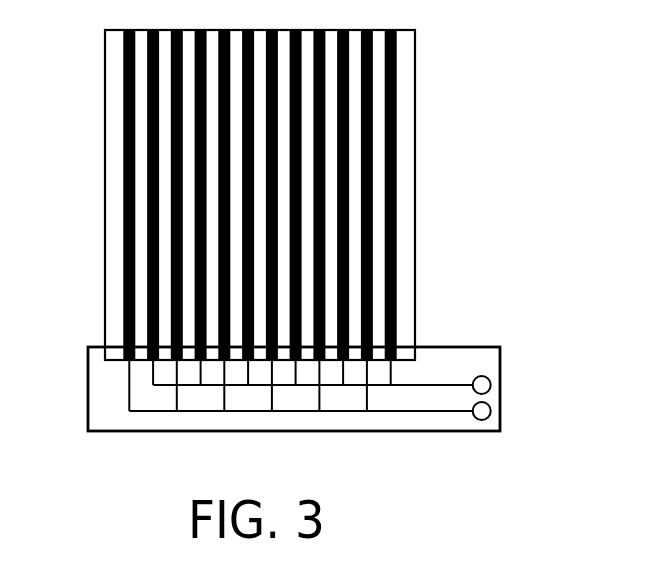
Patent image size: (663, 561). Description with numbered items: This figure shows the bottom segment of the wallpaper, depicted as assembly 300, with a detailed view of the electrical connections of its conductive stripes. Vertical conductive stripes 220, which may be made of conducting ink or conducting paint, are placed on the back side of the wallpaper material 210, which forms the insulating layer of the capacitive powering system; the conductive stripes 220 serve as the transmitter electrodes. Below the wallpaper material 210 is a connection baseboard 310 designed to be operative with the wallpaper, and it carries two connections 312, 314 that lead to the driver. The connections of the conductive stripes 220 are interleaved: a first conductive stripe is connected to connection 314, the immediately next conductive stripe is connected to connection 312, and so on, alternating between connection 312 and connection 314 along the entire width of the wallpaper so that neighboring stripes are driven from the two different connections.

The display device 300 is at (545, 106).
The wallpaper material 210 is at (415, 176).
The conductive stripes 220 is at (123, 87).
The connection baseboard 310 is at (452, 348).
The connection 312 is at (490, 385).
The connection 314 is at (490, 411).